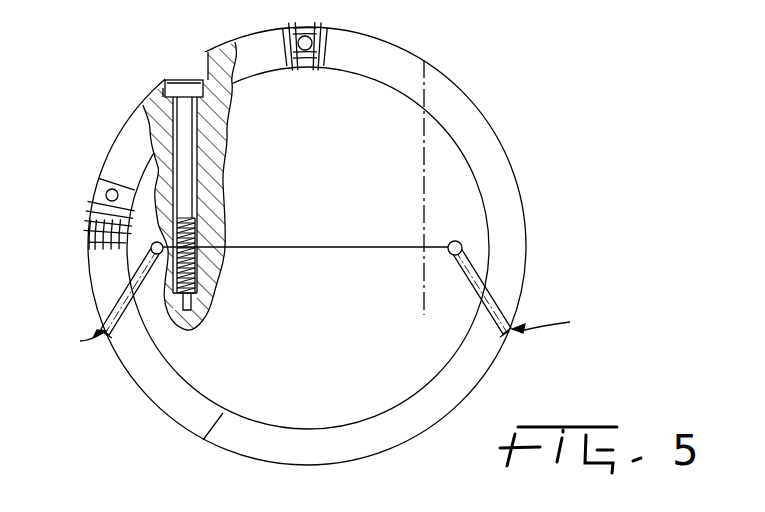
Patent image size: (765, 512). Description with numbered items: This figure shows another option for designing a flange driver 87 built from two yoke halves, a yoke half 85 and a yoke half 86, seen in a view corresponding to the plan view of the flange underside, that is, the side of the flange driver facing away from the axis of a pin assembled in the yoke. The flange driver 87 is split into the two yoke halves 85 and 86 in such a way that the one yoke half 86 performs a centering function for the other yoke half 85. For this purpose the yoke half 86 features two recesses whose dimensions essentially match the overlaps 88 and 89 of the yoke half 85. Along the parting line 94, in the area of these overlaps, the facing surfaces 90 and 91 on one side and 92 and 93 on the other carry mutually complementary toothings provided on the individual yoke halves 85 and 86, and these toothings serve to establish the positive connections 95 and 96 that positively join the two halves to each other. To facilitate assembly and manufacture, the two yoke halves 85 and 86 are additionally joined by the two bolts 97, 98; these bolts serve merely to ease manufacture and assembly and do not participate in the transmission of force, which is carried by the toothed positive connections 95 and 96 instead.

The yoke half 85 is at (331, 32).
The yoke half 86 is at (207, 432).
The flange driver 87 is at (506, 92).
The overlap 88 is at (110, 287).
The overlap 89 is at (508, 275).
The facing surface 90 is at (103, 338).
The facing surface 91 is at (92, 312).
The facing surface 92 is at (505, 336).
The facing surface 93 is at (462, 241).
The parting line 94 is at (336, 246).
The positive connection 95 is at (80, 341).
The positive connection 96 is at (558, 322).
The bolt 97 is at (194, 180).
The bolt 98 is at (424, 168).